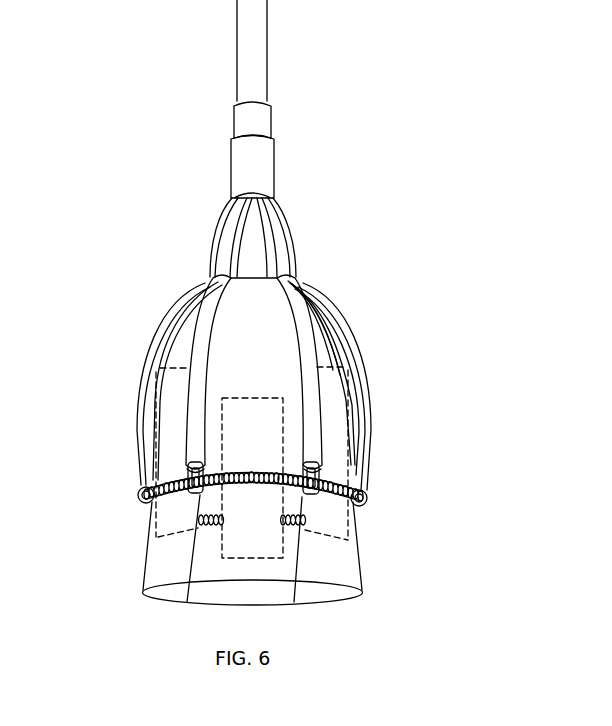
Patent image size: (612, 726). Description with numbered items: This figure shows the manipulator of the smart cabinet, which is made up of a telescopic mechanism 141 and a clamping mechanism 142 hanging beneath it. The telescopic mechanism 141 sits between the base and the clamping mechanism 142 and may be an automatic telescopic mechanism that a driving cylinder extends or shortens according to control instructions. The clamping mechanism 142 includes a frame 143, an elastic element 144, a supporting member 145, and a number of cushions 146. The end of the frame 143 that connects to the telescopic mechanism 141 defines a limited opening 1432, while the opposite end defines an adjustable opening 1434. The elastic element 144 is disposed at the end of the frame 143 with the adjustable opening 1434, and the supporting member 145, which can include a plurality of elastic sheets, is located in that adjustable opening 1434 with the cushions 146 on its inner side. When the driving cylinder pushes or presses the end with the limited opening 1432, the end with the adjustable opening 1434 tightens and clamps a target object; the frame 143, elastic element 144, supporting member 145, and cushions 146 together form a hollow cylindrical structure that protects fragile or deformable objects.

The telescopic mechanism 141 is at (203, 134).
The limited opening 1432 is at (273, 246).
The frame 143 is at (345, 355).
The clamping mechanism 142 is at (128, 418).
The elastic element 144 is at (360, 483).
The adjustable opening 1434 is at (298, 494).
The cushions 146 is at (178, 515).
The supporting member 145 is at (175, 553).